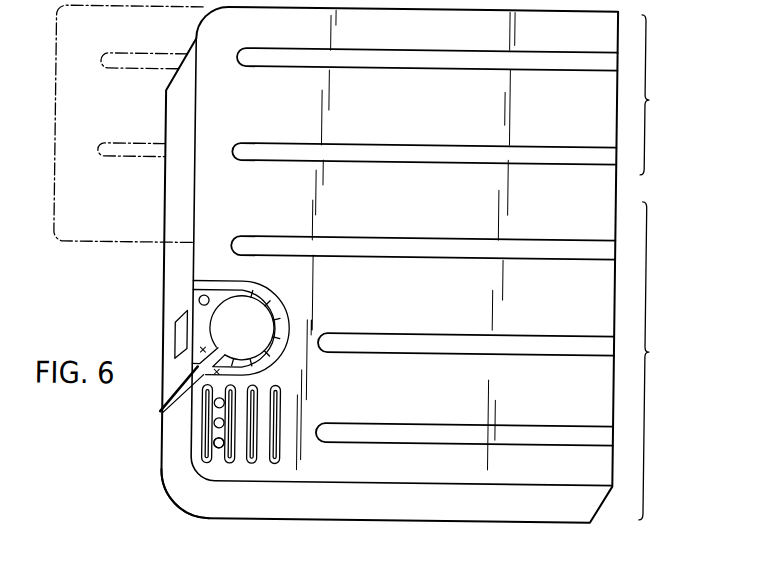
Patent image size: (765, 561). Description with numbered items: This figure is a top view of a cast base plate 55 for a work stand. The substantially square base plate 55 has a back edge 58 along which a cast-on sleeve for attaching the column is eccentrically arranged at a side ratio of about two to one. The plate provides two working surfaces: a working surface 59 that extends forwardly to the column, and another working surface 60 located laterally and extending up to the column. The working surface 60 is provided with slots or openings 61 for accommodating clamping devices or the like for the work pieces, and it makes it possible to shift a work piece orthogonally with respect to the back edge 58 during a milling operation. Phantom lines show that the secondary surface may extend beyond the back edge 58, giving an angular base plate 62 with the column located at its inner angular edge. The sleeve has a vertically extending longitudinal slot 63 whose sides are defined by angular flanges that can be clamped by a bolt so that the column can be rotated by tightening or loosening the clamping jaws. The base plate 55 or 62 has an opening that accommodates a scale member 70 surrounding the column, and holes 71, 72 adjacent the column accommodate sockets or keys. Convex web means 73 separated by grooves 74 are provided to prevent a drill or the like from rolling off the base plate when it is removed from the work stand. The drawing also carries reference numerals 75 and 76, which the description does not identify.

The base plate 55 is at (480, 44).
The back edge 58 is at (193, 260).
The working surface 59 is at (660, 361).
The working surface 60 is at (660, 95).
The slots or openings 61 is at (417, 150).
The base plate 62 is at (139, 43).
The longitudinal slot 63 is at (161, 413).
The scale member 70 is at (274, 308).
The hole 71 is at (199, 302).
The hole 72 is at (220, 452).
The convex web means 73 is at (231, 432).
The grooves 74 is at (267, 445).
The rounded corner 75 is at (201, 490).
The window 76 is at (175, 336).